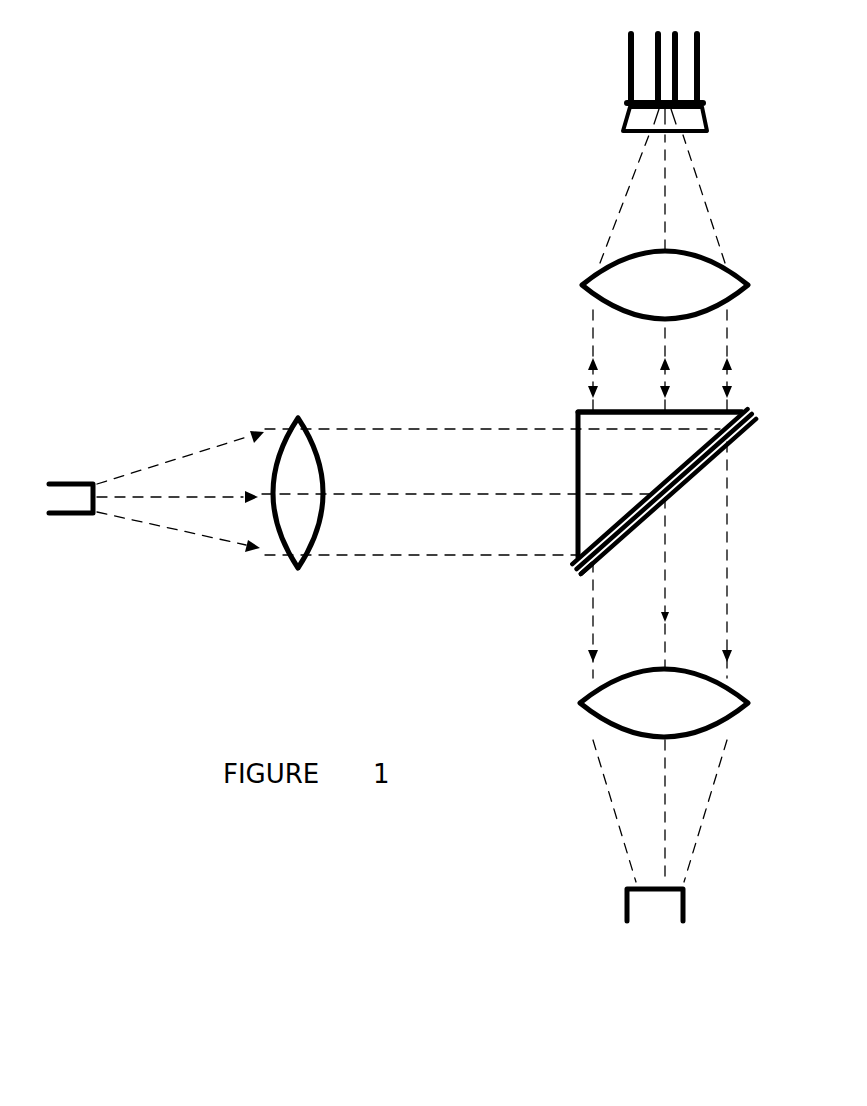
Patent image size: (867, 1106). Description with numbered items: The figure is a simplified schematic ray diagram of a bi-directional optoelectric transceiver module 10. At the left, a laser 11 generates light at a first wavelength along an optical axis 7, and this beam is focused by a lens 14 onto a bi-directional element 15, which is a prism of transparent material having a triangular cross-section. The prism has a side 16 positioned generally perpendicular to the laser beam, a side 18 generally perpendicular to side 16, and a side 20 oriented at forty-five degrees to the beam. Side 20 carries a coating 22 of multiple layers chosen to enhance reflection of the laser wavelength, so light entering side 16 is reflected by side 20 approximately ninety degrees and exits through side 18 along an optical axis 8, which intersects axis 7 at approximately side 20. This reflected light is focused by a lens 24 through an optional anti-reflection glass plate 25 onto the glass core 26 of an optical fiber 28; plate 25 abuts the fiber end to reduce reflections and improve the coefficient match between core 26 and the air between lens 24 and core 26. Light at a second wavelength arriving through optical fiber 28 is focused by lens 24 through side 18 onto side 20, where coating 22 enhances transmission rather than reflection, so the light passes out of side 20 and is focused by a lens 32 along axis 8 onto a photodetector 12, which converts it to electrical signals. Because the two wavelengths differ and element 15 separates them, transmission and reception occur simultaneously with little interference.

The bi-directional optoelectric transceiver module 10 is at (361, 206).
The laser 11 is at (74, 481).
The optical axis 7 is at (347, 568).
The lens 14 is at (306, 428).
The bi-directional element 15 is at (540, 588).
The side 16 is at (578, 463).
The side 18 is at (588, 411).
The coating 22 is at (753, 420).
The side 20 is at (584, 583).
The optical axis 8 is at (752, 218).
The lens 24 is at (585, 281).
The anti-reflection glass plate 25 is at (707, 120).
The glass core 26 is at (682, 77).
The optical fiber 28 is at (640, 87).
The lens 32 is at (585, 691).
The photodetector 12 is at (690, 900).